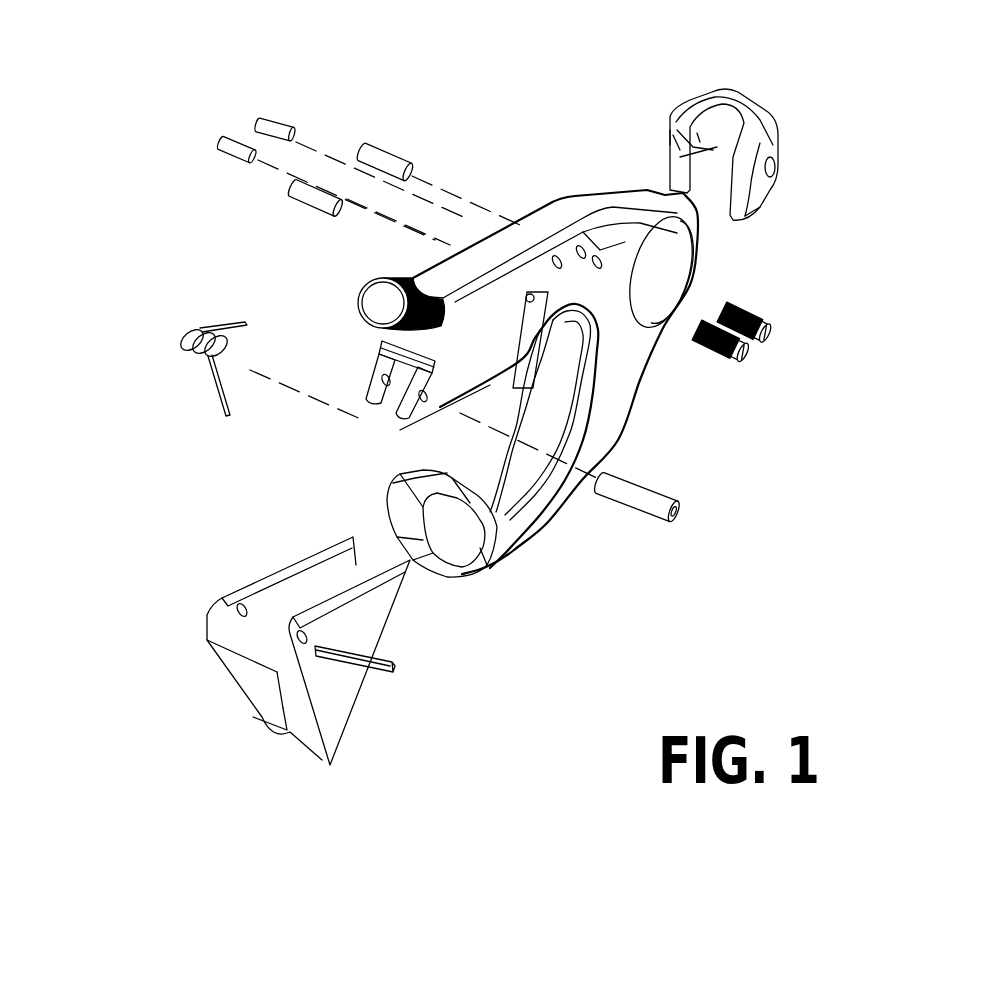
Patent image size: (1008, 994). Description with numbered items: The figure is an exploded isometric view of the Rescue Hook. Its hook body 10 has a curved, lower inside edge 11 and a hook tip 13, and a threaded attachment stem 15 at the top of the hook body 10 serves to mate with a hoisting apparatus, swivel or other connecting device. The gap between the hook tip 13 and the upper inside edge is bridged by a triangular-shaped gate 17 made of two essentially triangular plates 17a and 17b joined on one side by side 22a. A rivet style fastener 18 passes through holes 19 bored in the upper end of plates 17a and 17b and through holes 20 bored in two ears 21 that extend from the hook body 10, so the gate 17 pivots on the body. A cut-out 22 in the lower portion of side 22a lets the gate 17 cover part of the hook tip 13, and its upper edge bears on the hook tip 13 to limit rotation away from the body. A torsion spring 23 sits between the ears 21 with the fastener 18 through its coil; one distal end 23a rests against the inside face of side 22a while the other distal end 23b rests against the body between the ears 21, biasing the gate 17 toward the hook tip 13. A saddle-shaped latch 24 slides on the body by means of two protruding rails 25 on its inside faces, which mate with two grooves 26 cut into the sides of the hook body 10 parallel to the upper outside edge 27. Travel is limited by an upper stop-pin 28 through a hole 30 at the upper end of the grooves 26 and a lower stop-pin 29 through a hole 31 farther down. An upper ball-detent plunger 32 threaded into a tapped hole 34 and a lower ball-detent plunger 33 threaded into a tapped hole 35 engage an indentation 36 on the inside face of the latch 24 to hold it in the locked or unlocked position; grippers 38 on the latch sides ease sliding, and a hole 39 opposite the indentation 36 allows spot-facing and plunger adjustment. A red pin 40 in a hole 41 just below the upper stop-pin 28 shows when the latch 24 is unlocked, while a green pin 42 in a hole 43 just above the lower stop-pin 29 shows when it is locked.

The hook body 10 is at (615, 351).
The curved, lower inside edge 11 is at (543, 417).
The hook tip 13 is at (410, 507).
The threaded attachment stem 15 is at (385, 305).
The triangular-shaped gate 17 is at (397, 640).
The triangular plate 17a is at (348, 688).
The triangular plate 17b is at (310, 572).
The rivet style fastener 18 is at (633, 493).
The holes 19 is at (262, 668).
The holes 20 is at (500, 395).
The ears 21 is at (403, 437).
The cut-out 22 is at (295, 742).
The side 22a is at (262, 700).
The torsion spring 23 is at (197, 348).
The distal end 23a is at (223, 420).
The distal end 23b is at (247, 322).
The latch 24 is at (730, 108).
The protruding rails 25 is at (667, 143).
The grooves 26 is at (623, 243).
The upper outside edge 27 is at (493, 247).
The upper stop-pin 28 is at (310, 200).
The lower stop-pin 29 is at (380, 160).
The hole 30 is at (555, 408).
The hole 31 is at (647, 273).
The upper ball-detent plunger 32 is at (670, 313).
The lower ball-detent plunger 33 is at (693, 302).
The tapped hole 34 is at (556, 256).
The tapped hole 35 is at (580, 246).
The indentation 36 is at (679, 130).
The grippers 38 is at (763, 195).
The hole 39 is at (773, 168).
The red pin 40 is at (230, 138).
The hole 41 is at (530, 367).
The green pin 42 is at (268, 120).
The hole 43 is at (660, 297).